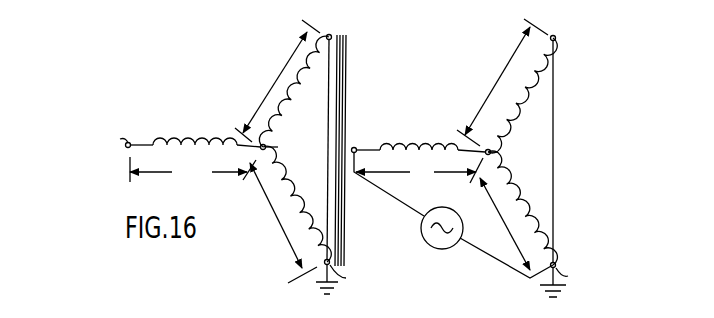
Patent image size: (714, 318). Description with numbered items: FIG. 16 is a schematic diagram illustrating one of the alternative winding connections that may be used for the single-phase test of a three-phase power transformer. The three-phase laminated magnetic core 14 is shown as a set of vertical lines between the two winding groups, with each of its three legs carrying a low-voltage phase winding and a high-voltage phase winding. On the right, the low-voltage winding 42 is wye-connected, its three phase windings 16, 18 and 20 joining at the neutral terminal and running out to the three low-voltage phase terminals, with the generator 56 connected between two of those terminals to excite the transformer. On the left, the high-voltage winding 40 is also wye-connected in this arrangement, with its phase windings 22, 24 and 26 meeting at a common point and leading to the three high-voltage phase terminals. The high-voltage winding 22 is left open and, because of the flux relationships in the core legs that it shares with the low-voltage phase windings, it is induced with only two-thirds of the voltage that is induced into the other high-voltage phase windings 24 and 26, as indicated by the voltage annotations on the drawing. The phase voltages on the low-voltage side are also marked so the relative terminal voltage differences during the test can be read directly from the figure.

The three-phase laminated magnetic core 14 is at (346, 47).
The low-voltage winding 16 is at (426, 138).
The low-voltage winding 18 is at (522, 95).
The low-voltage winding 20 is at (522, 208).
The high-voltage winding 22 is at (204, 137).
The high-voltage winding 24 is at (294, 91).
The high-voltage winding 26 is at (297, 204).
The high-voltage winding 40 is at (236, 82).
The low-voltage winding 42 is at (455, 102).
The generator 56 is at (455, 250).